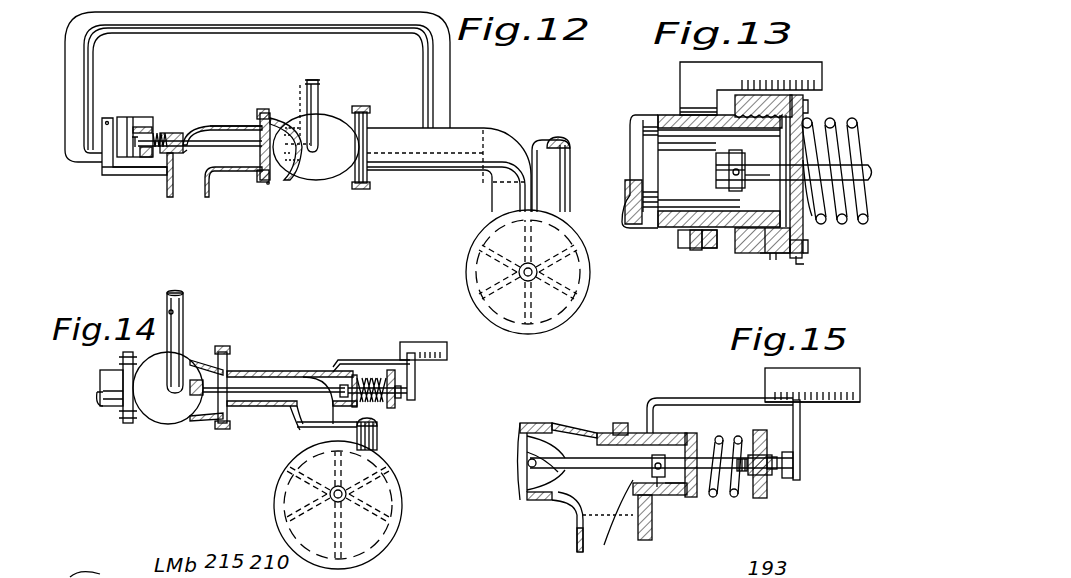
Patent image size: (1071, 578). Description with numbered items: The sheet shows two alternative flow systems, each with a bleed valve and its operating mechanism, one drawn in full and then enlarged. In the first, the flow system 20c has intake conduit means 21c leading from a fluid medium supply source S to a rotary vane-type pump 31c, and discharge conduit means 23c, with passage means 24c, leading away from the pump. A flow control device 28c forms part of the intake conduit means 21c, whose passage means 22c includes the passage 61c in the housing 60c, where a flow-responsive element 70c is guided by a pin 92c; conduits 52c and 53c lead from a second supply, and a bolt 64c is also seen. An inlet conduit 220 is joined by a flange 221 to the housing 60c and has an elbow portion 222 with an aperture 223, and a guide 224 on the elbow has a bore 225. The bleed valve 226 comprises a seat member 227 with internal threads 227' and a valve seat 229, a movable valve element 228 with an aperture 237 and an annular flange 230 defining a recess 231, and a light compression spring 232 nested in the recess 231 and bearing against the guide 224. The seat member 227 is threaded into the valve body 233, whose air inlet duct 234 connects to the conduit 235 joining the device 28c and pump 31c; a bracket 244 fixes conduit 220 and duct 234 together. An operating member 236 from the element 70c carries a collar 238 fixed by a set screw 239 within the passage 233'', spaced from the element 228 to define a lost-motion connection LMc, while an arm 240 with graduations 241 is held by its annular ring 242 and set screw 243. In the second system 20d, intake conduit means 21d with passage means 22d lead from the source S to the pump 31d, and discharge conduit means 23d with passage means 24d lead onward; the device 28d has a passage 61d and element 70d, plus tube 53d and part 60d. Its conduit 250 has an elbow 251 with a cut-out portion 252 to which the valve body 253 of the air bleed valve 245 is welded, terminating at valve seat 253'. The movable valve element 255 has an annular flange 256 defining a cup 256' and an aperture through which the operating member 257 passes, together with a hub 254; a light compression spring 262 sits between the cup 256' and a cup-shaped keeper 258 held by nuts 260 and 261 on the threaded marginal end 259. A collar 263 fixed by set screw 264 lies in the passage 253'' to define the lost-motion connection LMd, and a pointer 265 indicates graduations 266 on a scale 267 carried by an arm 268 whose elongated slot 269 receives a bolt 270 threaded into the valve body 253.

In FIG. 12, the gaseous fluid inlet duct 234 is at (95, 48).
In FIG. 12, the guide 224 is at (150, 124).
In FIG. 12, the elbow portion 222 is at (178, 132).
In FIG. 12, the bore 225 is at (165, 150).
In FIG. 12, the aperture 223 is at (178, 162).
In FIG. 12, the bracket 244 is at (112, 172).
In FIG. 12, the passage means 22c is at (210, 125).
In FIG. 12, the inlet conduit 220 is at (210, 190).
In FIG. 12, the operating member 236 is at (214, 172).
In FIG. 13, the operating member 236 is at (770, 182).
In FIG. 12, the flow system 20c is at (226, 123).
In FIG. 12, the flange 221 is at (263, 110).
In FIG. 12, the flow-responsive element 70c is at (284, 183).
In FIG. 12, the bolt 64c is at (265, 186).
In FIG. 12, the flow control device 28c is at (316, 182).
In FIG. 12, the conduit 52c is at (340, 118).
In FIG. 12, the conduit 53c is at (318, 98).
In FIG. 12, the pin 92c is at (302, 96).
In FIG. 12, the passage 61c is at (298, 126).
In FIG. 12, the housing 60c is at (356, 115).
In FIG. 12, the intake conduit means 21c is at (392, 128).
In FIG. 12, the conduit 235 is at (440, 166).
In FIG. 12, the discharge conduit means 23c is at (570, 156).
In FIG. 12, the passage means 24c is at (556, 137).
In FIG. 12, the rotary vane-type pump 31c is at (466, 268).
In FIG. 12, the fluid medium supply source S is at (190, 188).
In FIG. 14, the fluid medium supply source S is at (96, 390).
In FIG. 13, the arm 240 is at (770, 68).
In FIG. 13, the graduations 241 is at (800, 86).
In FIG. 13, the annular flange 230 is at (806, 108).
In FIG. 13, the collar 238 is at (706, 150).
In FIG. 13, the aperture 237 is at (800, 166).
In FIG. 13, the passage 233'' is at (703, 184).
In FIG. 13, the light compression spring 232 is at (862, 136).
In FIG. 13, the recess 231 is at (812, 222).
In FIG. 13, the set screw 239 is at (670, 230).
In FIG. 13, the annular ring 242 is at (690, 242).
In FIG. 13, the set screw 243 is at (707, 250).
In FIG. 13, the valve body 233 is at (689, 256).
In FIG. 13, the seat member 227 is at (753, 260).
In FIG. 13, the internal threads 227' is at (745, 283).
In FIG. 13, the lost-motion connection LMc is at (776, 258).
In FIG. 13, the gaseous fluid bleed valve 226 is at (800, 262).
In FIG. 13, the movable valve element 228 is at (808, 246).
In FIG. 13, the valve seat 229 is at (800, 258).
In FIG. 14, the flow control device 28d is at (148, 421).
In FIG. 14, the vertical tube 53d is at (165, 290).
In FIG. 14, the flow system 20d is at (196, 350).
In FIG. 14, the flow-responsive element 70d is at (199, 420).
In FIG. 14, the inner tube 60d is at (200, 406).
In FIG. 14, the passage 61d is at (224, 352).
In FIG. 14, the intake conduit means 21d is at (248, 369).
In FIG. 14, the passage means 22d is at (280, 372).
In FIG. 14, the conduit 250 is at (273, 410).
In FIG. 14, the operating member 257 is at (260, 410).
In FIG. 15, the operating member 257 is at (620, 469).
In FIG. 14, the discharge conduit means 23d is at (378, 438).
In FIG. 14, the passage means 24d is at (376, 418).
In FIG. 14, the air bleed valve 245 is at (333, 366).
In FIG. 14, the passage 253'' is at (380, 361).
In FIG. 14, the rotary vane type pump 31d is at (276, 494).
In FIG. 15, the scale 267 is at (834, 380).
In FIG. 15, the graduations 266 is at (820, 403).
In FIG. 15, the light compression spring 262 is at (755, 398).
In FIG. 15, the arm 268 is at (649, 406).
In FIG. 15, the elongated slot 269 is at (644, 420).
In FIG. 15, the bolt 270 is at (612, 425).
In FIG. 15, the annular flange / central aperture 256 is at (660, 421).
In FIG. 15, the elbow 251 is at (572, 505).
In FIG. 15, the cut-out portion 252 is at (633, 497).
In FIG. 15, the set screw 264 is at (622, 522).
In FIG. 15, the valve body 253 is at (665, 517).
In FIG. 15, the collar 263 is at (655, 497).
In FIG. 15, the lost-motion connection LMd is at (668, 514).
In FIG. 15, the hub 254 is at (698, 426).
In FIG. 15, the movable valve element 255 is at (716, 436).
In FIG. 15, the cup 256' is at (727, 437).
In FIG. 15, the marginal end 259 is at (760, 454).
In FIG. 15, the cup-shaped keeper 258 is at (770, 490).
In FIG. 15, the nut 260 is at (758, 497).
In FIG. 15, the valve seat 253' is at (758, 499).
In FIG. 15, the nut 261 is at (794, 476).
In FIG. 15, the pointer 265 is at (801, 445).